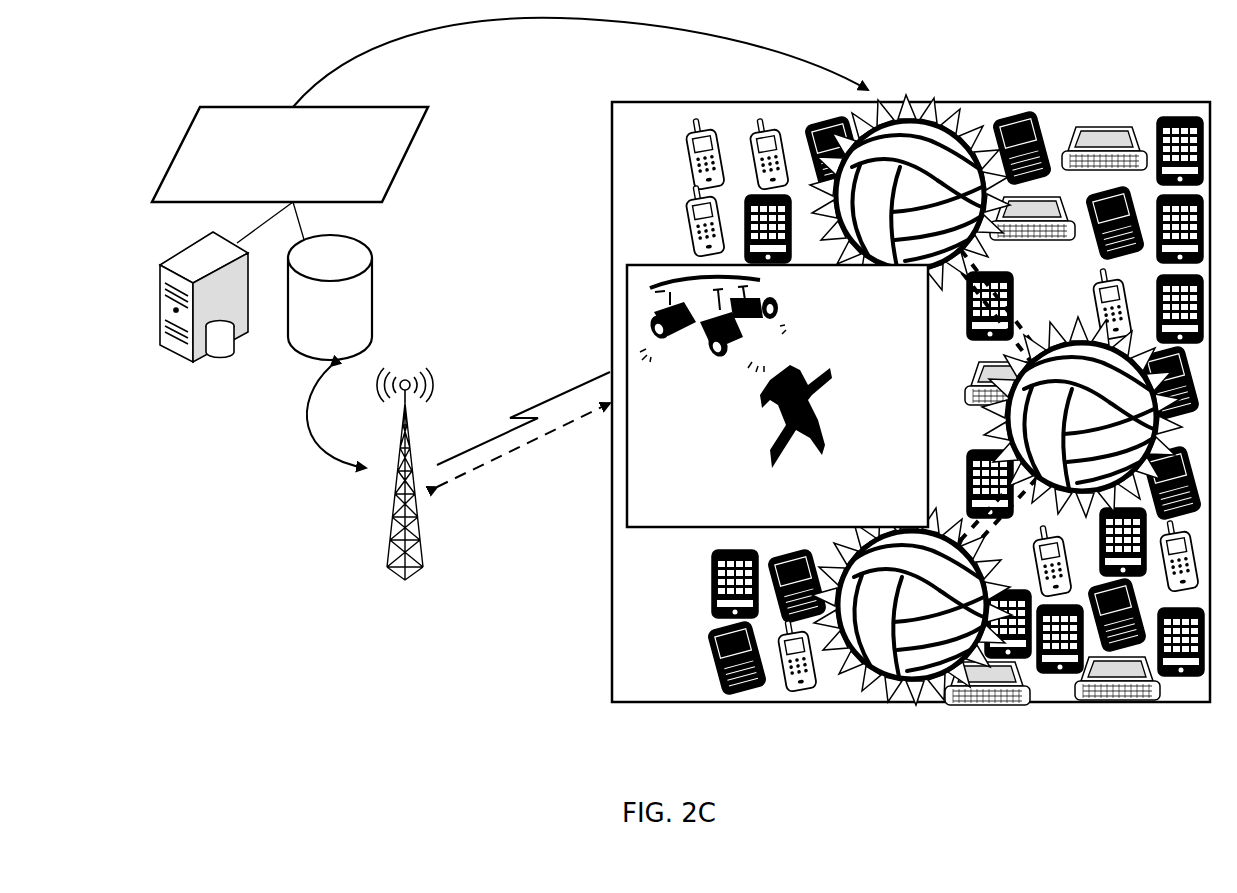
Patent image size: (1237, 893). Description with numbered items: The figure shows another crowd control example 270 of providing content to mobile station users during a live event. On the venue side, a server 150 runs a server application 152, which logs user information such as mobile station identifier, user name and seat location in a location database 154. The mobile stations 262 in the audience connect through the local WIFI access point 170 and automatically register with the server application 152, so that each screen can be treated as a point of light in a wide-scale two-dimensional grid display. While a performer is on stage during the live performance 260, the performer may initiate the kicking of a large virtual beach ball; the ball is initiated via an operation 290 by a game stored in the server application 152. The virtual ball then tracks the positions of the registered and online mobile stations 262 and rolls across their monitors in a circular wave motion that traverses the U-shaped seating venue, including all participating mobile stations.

The crowd control example 270 is at (126, 47).
The server application 152 is at (290, 175).
The server 150 is at (204, 324).
The location database 154 is at (388, 297).
The WIFI access point 170 is at (458, 548).
The operation 290 is at (580, 86).
The live performance 260 is at (777, 396).
The mobile stations 262 is at (911, 432).